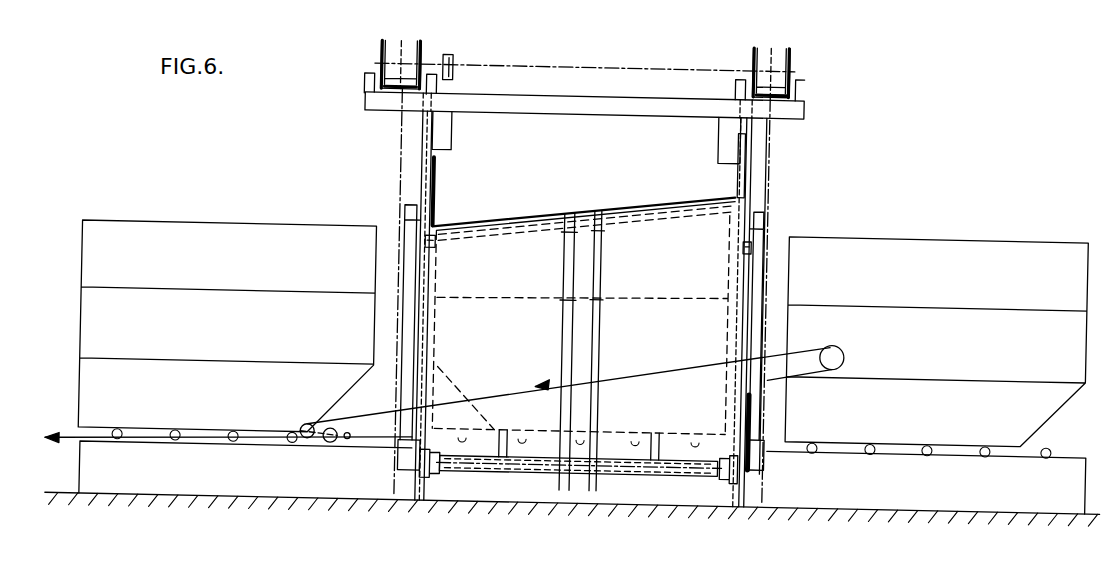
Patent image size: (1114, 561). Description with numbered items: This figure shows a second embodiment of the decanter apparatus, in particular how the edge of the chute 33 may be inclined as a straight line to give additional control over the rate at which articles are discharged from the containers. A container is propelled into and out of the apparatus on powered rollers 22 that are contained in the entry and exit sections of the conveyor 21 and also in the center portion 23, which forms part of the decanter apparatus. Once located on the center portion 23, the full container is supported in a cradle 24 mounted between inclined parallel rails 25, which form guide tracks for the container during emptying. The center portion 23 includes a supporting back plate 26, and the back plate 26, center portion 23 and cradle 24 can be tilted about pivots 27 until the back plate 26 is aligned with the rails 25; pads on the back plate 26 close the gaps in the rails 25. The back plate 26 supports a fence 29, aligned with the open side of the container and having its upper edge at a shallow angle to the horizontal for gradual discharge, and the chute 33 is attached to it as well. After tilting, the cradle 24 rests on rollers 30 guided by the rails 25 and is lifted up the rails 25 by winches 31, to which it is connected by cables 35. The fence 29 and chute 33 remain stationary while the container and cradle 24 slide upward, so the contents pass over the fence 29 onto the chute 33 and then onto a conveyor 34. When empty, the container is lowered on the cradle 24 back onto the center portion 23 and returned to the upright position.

The conveyor 21 is at (148, 492).
The powered rollers 22 is at (350, 445).
The center portion 23 is at (499, 494).
The cradle 24 is at (674, 430).
The inclined parallel rails 25 is at (419, 136).
The supporting back plate 26 is at (759, 241).
The pivots 27 is at (761, 464).
The fence 29 is at (655, 277).
The rollers 30 is at (434, 244).
The winches 31 is at (392, 44).
The chute 33 is at (437, 182).
The conveyor 34 is at (61, 441).
The cables 35 is at (765, 166).